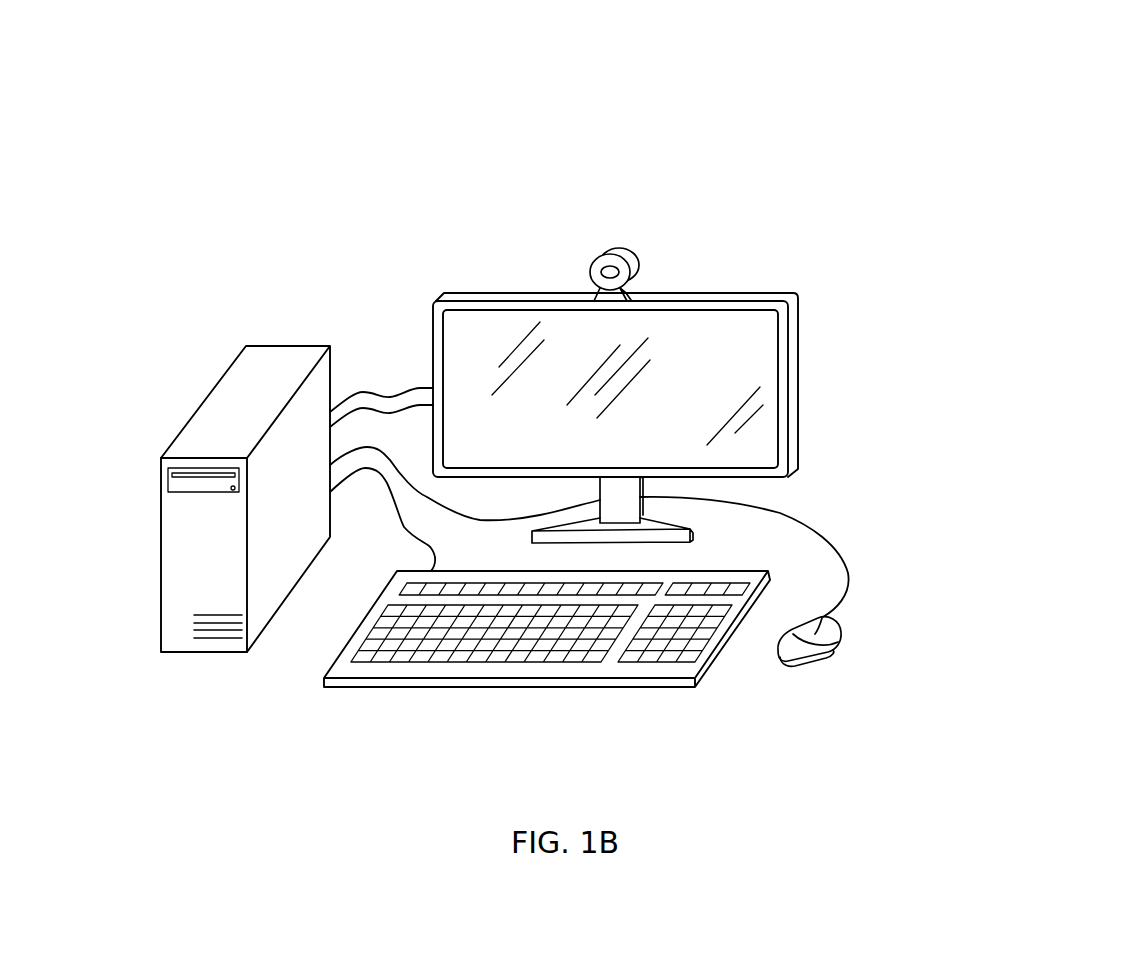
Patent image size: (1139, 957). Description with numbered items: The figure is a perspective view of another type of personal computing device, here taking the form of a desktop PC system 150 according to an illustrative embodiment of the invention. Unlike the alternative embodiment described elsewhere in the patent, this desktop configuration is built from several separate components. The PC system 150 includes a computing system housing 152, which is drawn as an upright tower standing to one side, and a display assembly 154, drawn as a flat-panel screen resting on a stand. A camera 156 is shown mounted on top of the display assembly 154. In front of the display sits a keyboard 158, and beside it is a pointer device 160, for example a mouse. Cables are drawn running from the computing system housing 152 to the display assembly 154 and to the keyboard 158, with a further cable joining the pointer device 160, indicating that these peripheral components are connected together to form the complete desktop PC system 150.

The desktop PC system 150 is at (996, 118).
The computing system housing 152 is at (230, 370).
The display assembly 154 is at (800, 327).
The camera 156 is at (590, 263).
The keyboard 158 is at (343, 687).
The pointer device 160 is at (837, 648).